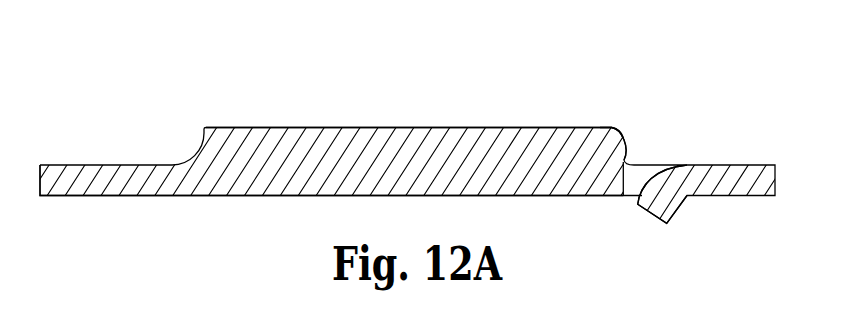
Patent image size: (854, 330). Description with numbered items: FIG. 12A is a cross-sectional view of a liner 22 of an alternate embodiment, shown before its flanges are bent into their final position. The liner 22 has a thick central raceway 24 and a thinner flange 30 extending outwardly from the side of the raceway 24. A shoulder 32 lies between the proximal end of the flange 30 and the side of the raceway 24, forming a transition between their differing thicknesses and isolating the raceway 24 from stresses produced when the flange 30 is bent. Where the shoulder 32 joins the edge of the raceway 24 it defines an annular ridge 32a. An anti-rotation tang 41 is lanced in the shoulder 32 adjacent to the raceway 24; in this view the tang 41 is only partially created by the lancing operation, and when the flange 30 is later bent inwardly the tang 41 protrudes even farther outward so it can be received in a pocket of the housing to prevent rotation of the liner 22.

The liner 22 is at (200, 103).
The raceway 24 is at (286, 127).
The flange 30 is at (98, 196).
The shoulder 32 is at (612, 160).
The annular ridge 32a is at (613, 122).
The tang 41 is at (677, 210).